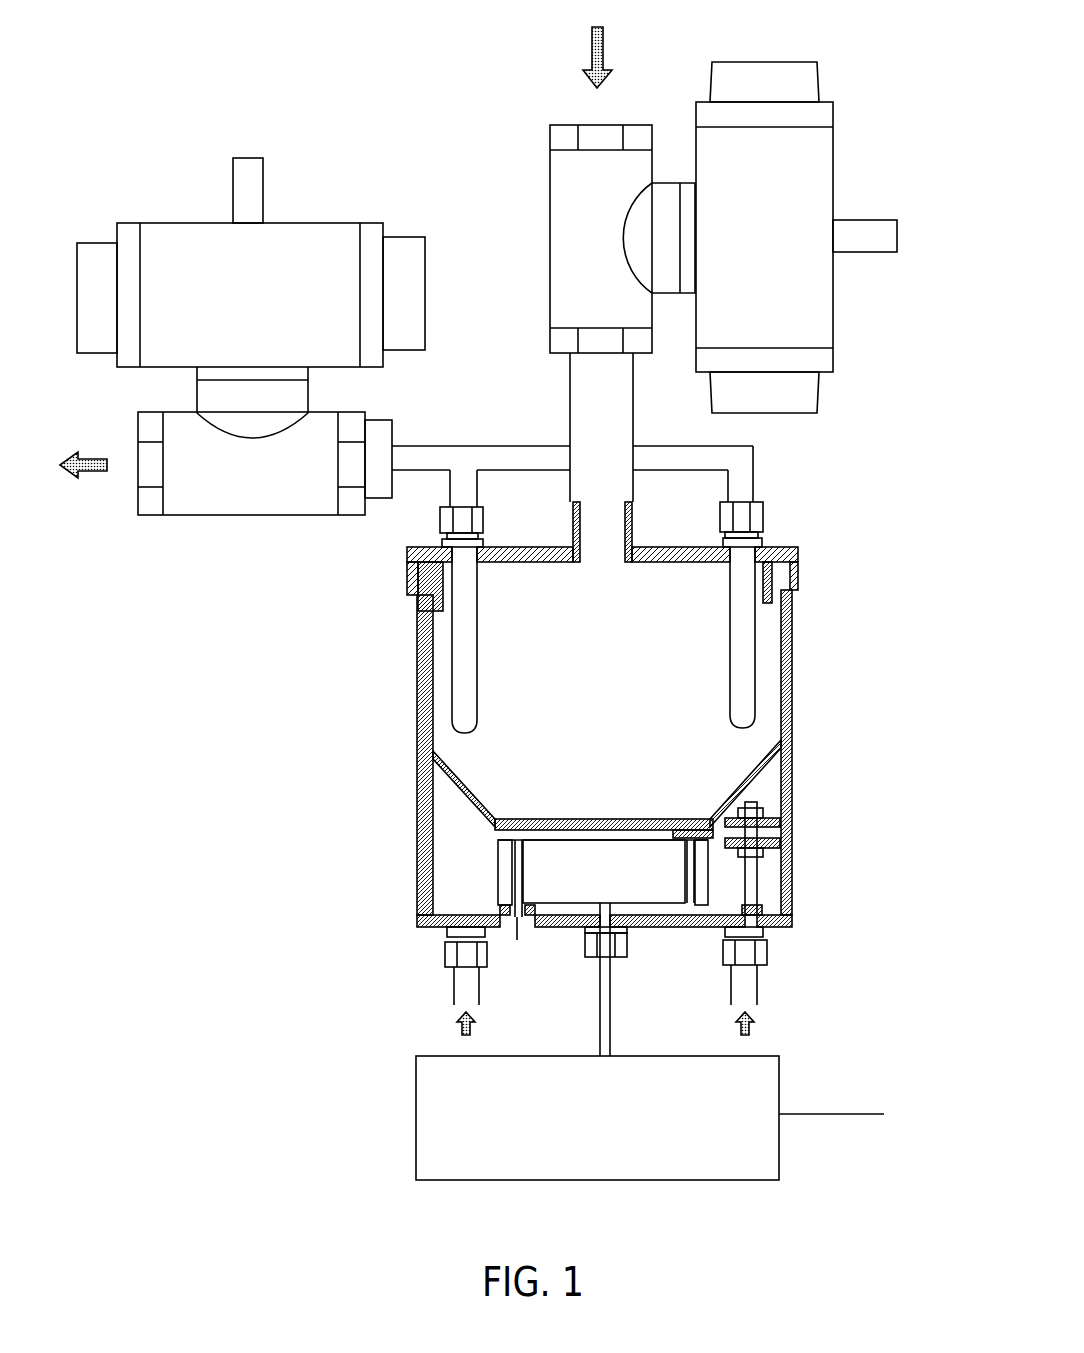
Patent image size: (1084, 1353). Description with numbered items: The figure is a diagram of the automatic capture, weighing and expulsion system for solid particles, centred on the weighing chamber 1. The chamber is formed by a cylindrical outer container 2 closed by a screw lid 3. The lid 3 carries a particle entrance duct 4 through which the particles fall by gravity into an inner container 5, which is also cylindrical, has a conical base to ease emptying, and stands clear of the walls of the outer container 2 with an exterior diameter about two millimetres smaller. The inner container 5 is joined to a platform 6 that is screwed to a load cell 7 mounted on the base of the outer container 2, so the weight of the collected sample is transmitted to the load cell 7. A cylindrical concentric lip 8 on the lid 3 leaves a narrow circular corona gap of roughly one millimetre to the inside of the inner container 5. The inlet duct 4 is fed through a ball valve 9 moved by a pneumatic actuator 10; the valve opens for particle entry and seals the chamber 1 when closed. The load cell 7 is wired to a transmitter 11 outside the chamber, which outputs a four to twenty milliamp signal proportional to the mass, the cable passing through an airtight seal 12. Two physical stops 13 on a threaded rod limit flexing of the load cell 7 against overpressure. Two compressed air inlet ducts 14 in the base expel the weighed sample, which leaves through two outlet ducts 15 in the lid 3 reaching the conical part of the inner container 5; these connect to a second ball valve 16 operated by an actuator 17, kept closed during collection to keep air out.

The weighing chamber 1 is at (447, 845).
The cylindrical outer container 2 is at (790, 742).
The screw lid 3 is at (782, 545).
The particle entrance duct 4 is at (635, 523).
The inner container 5 is at (456, 788).
The platform 6 is at (495, 833).
The load cell 7 is at (577, 870).
The cylindrical concentric lip 8 is at (432, 615).
The ball valve 9 is at (550, 193).
The pneumatic actuator 10 is at (833, 167).
The transmitter 11 is at (443, 1128).
The seal 12 is at (583, 933).
The physical stops 13 is at (783, 825).
The compressed air inlet ducts 14 is at (731, 997).
The weighing chamber outlet ducts 15 is at (728, 602).
The weighing chamber outlet ball valve 16 is at (245, 515).
The weighing chamber outlet valve actuator 17 is at (308, 223).